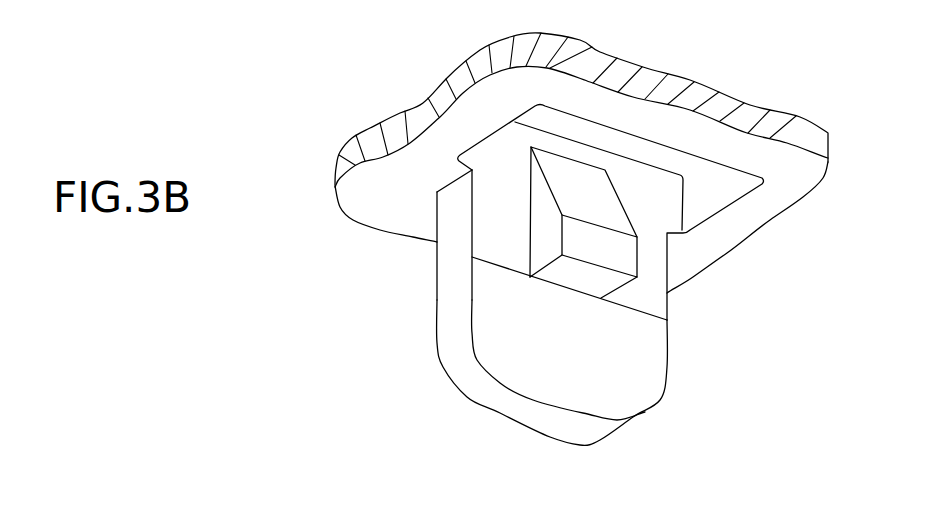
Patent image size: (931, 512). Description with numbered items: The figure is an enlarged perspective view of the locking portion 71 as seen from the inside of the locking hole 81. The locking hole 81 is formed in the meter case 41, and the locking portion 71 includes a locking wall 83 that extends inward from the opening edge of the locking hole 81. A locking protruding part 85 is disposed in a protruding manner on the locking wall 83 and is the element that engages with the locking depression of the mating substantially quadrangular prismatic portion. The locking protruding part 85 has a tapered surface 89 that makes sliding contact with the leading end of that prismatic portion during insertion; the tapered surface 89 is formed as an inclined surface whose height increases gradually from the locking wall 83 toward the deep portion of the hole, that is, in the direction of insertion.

The locking portion 71 is at (704, 61).
The meter case 41 is at (782, 180).
The locking hole 81 is at (715, 192).
The locking wall 83 is at (450, 253).
The locking protruding part 85 is at (537, 232).
The tapered surface 89 is at (578, 183).